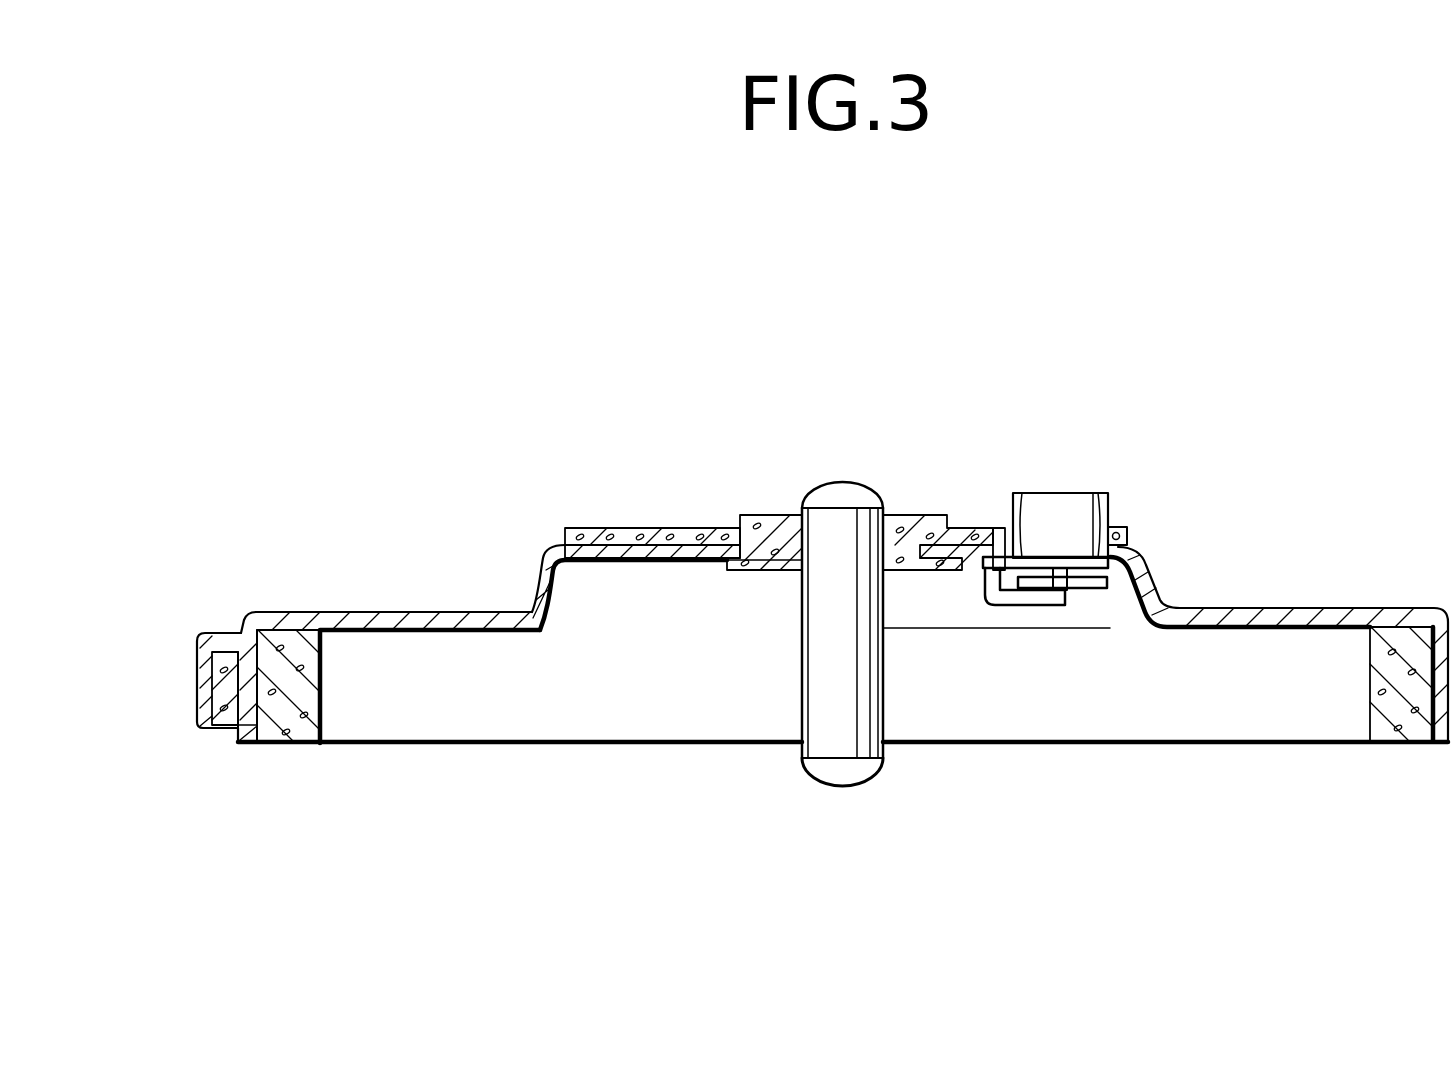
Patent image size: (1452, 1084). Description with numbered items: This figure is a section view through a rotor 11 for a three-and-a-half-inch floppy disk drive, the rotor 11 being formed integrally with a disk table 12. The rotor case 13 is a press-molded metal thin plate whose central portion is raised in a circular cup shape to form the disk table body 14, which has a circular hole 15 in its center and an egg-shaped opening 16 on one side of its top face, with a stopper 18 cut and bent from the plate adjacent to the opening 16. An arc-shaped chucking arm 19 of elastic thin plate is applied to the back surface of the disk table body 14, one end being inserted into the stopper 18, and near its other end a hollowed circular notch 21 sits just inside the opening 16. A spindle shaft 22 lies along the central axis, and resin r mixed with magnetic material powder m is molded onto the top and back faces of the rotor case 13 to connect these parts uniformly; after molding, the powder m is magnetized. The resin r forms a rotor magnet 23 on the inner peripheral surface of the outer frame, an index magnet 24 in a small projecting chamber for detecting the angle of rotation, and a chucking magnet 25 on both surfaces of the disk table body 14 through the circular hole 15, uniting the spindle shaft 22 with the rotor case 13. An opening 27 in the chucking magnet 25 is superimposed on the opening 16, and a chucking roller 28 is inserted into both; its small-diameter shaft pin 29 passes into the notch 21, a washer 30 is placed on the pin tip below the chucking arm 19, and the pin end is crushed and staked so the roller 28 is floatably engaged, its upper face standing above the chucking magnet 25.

The rotor 11 is at (1323, 557).
The disk table 12 is at (683, 528).
The rotor case 13 is at (1404, 607).
The disk table body 14 is at (541, 545).
The circular hole 15 is at (780, 540).
The opening 16 is at (1020, 538).
The stopper 18 is at (1035, 626).
The chucking arm 19 is at (983, 628).
The notch 21 is at (1148, 562).
The spindle shaft 22 is at (848, 484).
The rotor magnet 23 is at (337, 730).
The index magnet 24 is at (211, 636).
The chucking magnet 25 is at (897, 514).
The opening 27 is at (1004, 526).
The chucking roller 28 is at (1073, 492).
The shaft pin 29 is at (1100, 530).
The washer 30 is at (1108, 628).
The magnetic material powder m is at (630, 535).
The resin r is at (591, 530).